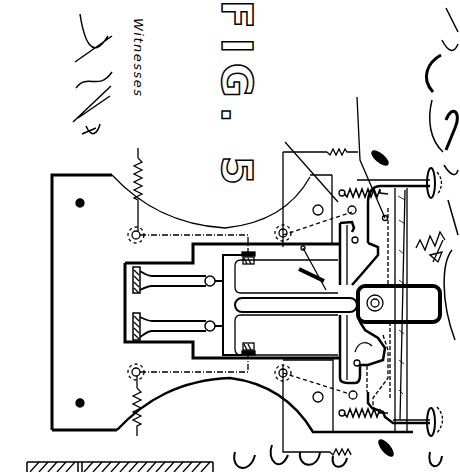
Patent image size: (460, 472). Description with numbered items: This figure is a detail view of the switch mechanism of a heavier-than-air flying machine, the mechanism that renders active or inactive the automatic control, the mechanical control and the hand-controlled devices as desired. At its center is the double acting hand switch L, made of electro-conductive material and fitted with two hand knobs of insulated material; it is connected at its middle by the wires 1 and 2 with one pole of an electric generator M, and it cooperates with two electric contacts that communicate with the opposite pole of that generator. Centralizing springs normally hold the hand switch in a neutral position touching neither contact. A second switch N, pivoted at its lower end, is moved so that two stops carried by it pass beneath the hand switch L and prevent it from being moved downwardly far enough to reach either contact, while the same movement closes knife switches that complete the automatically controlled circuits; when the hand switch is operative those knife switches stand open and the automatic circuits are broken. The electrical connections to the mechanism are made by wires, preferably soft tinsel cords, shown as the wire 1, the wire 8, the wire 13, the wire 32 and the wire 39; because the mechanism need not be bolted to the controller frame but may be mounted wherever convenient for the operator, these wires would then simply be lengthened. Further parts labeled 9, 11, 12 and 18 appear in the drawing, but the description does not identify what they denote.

The wire 1 is at (459, 246).
The wire 2 is at (367, 159).
The wire 8 is at (407, 333).
The wedge 9 is at (415, 304).
The contacts 11 is at (349, 397).
The binding screws 12 is at (254, 350).
The wire 13 is at (283, 395).
The upper bracket 18 is at (271, 110).
The wire 32 is at (140, 180).
The wire 39 is at (141, 409).